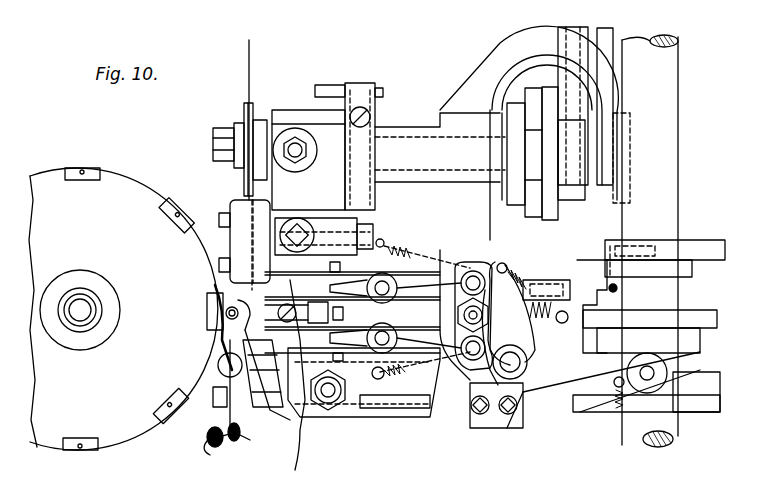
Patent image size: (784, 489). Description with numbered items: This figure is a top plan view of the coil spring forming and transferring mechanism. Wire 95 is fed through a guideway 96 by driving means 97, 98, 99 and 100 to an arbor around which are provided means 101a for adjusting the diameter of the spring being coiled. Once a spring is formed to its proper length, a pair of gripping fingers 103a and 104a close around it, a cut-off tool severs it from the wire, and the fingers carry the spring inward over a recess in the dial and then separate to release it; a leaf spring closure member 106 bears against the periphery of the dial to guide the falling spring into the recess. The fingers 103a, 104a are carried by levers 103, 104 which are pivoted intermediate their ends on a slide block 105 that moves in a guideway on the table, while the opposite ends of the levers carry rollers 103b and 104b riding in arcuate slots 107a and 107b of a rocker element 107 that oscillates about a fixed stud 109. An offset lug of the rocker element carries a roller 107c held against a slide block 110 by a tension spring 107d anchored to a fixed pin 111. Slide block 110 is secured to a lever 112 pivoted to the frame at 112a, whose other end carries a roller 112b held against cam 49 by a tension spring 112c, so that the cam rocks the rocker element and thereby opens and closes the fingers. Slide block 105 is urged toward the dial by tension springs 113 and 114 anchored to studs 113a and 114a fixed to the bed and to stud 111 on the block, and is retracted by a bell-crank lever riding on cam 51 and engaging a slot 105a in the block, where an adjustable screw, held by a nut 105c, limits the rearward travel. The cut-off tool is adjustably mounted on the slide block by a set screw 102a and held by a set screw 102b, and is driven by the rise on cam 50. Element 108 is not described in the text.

The cam 49 is at (720, 390).
The cam 50 is at (717, 318).
The cam 51 is at (725, 252).
The wire 95 is at (251, 60).
The guideway 96 is at (253, 104).
The driving means 97 is at (516, 207).
The driving means 98 is at (550, 212).
The driving means 99 is at (572, 33).
The driving means 100 is at (607, 48).
The means for adjusting the diameter of the spring 101a is at (500, 264).
The set screw 102a is at (352, 289).
The set screw 102b is at (315, 382).
The lever 103 is at (382, 288).
The gripping finger 103a is at (227, 287).
The roller 103b is at (440, 175).
The lever 104 is at (382, 338).
The gripping finger 104a is at (225, 330).
The roller 104b is at (470, 400).
The slide block 105 is at (545, 320).
The slot 105a is at (610, 243).
The nut 105c is at (617, 289).
The leaf spring closure member 106 is at (224, 297).
The rocker element 107 is at (440, 318).
The arcuate slot 107a is at (532, 417).
The arcuate slot 107b is at (430, 418).
The roller 107c is at (540, 398).
The tension spring 107d is at (540, 278).
The screw 108 is at (304, 312).
The fixed stud 109 is at (385, 243).
The slide block 110 is at (498, 430).
The fixed pin 111 is at (596, 330).
The lever 112 is at (536, 420).
The pivot 112a is at (330, 403).
The roller 112b is at (668, 370).
The tension spring 112c is at (616, 410).
The tension spring 113 is at (412, 257).
The stud 113a is at (382, 242).
The tension spring 114 is at (404, 372).
The stud 114a is at (395, 400).